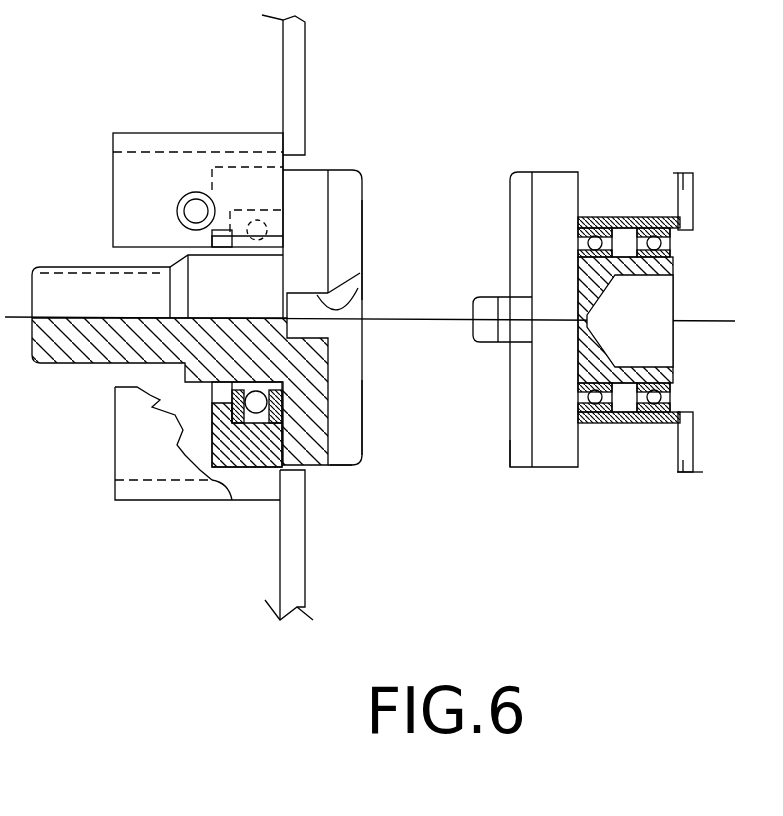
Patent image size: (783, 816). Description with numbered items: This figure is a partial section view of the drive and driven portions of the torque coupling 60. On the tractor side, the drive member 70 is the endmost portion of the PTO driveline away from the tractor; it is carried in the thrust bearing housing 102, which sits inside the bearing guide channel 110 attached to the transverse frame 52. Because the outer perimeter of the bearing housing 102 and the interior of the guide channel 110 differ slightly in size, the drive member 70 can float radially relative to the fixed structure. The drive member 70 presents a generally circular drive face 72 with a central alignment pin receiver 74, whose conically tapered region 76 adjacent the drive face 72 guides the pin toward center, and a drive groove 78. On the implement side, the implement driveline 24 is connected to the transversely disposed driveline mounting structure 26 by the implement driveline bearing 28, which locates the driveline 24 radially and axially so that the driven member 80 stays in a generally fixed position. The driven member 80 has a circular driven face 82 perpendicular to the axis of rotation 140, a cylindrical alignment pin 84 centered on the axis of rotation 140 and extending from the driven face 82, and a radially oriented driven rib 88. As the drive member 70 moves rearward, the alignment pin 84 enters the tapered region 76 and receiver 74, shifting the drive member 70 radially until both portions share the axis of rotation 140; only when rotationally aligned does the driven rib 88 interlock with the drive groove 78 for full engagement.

The implement driveline 24 is at (667, 380).
The driveline mounting structure 26 is at (608, 216).
The implement driveline bearing 28 is at (670, 243).
The transverse frame 52 is at (297, 77).
The torque coupling 60 is at (598, 287).
The drive member 70 is at (310, 221).
The drive face 72 is at (362, 253).
The alignment pin receiver 74 is at (330, 296).
The conically tapered region 76 is at (346, 346).
The drive groove 78 is at (350, 448).
The driven member 80 is at (560, 176).
The driven face 82 is at (532, 405).
The alignment pin 84 is at (491, 303).
The driven rib 88 is at (522, 448).
The thrust bearing housing 102 is at (257, 180).
The bearing guide channel 110 is at (170, 153).
The axis of rotation 140 is at (691, 321).